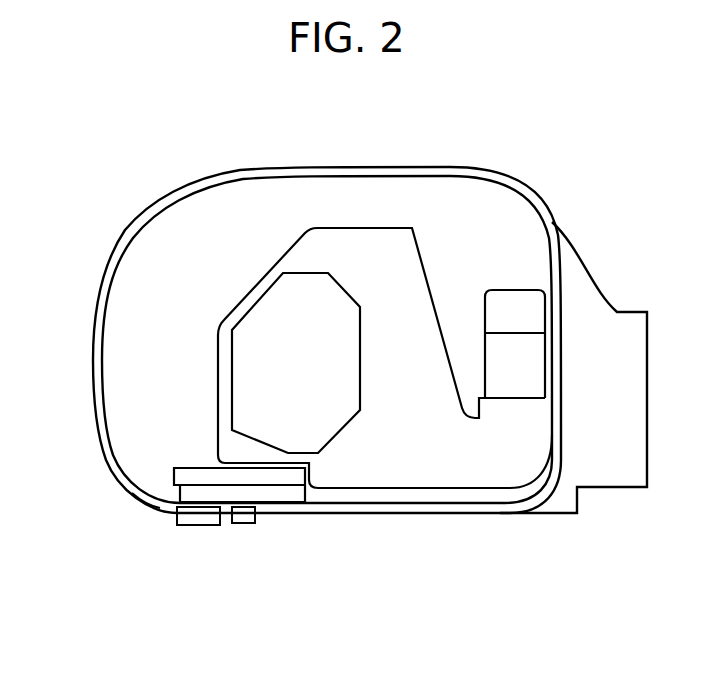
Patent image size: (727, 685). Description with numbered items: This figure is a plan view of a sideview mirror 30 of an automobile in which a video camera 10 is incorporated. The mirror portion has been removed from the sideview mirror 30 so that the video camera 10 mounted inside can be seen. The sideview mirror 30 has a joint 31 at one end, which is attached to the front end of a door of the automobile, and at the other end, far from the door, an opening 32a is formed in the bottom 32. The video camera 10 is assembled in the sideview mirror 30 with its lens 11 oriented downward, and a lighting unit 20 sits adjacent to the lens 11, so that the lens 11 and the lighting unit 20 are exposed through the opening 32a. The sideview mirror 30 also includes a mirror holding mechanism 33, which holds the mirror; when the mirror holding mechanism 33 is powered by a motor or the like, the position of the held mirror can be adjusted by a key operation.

The sideview mirror 30 is at (345, 341).
The joint 31 is at (608, 467).
The bottom 32 is at (470, 518).
The opening 32a is at (163, 516).
The mirror holding mechanism 33 is at (217, 372).
The video camera 10 is at (166, 478).
The lens 11 is at (200, 527).
The lighting unit 20 is at (245, 527).